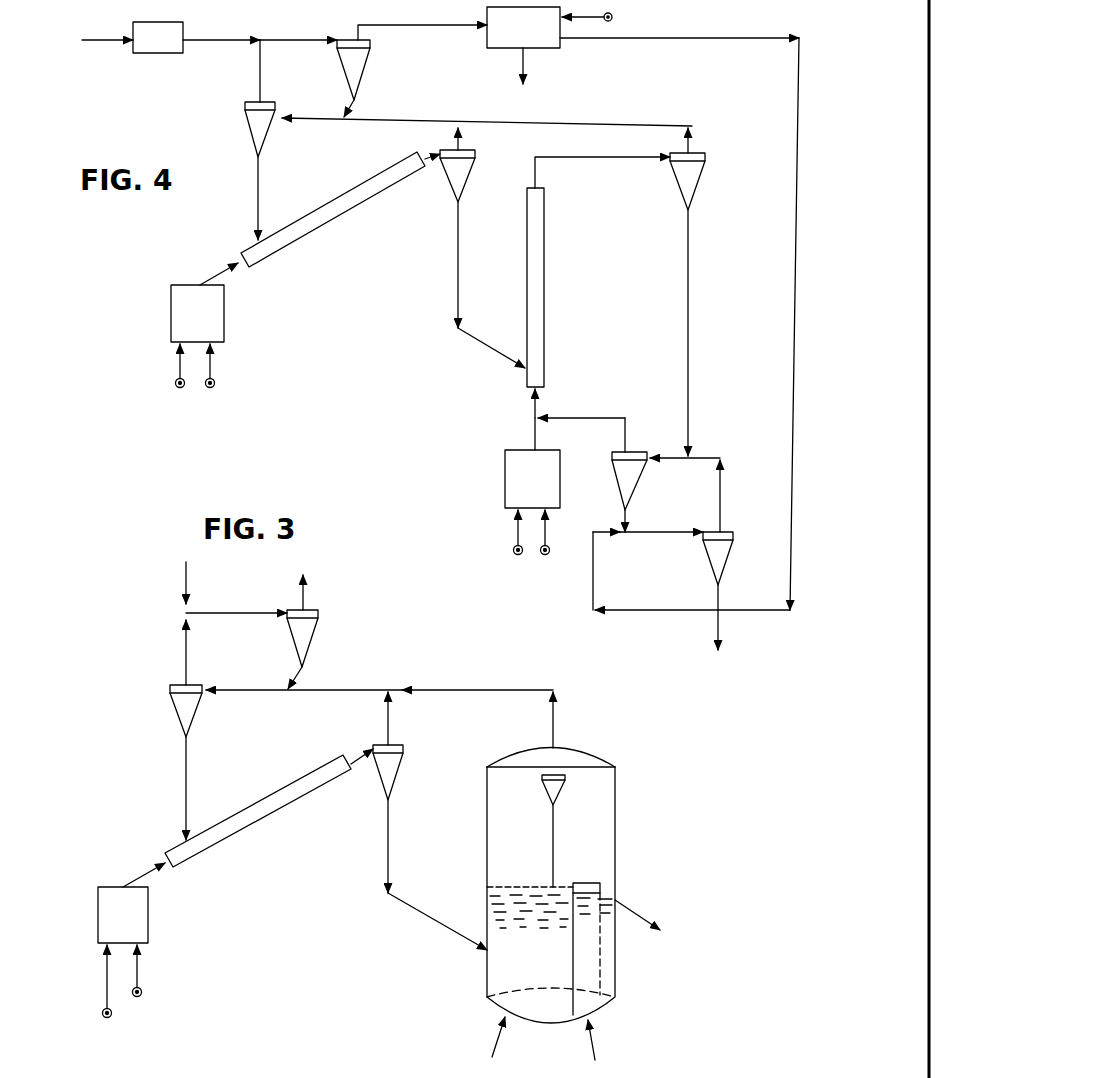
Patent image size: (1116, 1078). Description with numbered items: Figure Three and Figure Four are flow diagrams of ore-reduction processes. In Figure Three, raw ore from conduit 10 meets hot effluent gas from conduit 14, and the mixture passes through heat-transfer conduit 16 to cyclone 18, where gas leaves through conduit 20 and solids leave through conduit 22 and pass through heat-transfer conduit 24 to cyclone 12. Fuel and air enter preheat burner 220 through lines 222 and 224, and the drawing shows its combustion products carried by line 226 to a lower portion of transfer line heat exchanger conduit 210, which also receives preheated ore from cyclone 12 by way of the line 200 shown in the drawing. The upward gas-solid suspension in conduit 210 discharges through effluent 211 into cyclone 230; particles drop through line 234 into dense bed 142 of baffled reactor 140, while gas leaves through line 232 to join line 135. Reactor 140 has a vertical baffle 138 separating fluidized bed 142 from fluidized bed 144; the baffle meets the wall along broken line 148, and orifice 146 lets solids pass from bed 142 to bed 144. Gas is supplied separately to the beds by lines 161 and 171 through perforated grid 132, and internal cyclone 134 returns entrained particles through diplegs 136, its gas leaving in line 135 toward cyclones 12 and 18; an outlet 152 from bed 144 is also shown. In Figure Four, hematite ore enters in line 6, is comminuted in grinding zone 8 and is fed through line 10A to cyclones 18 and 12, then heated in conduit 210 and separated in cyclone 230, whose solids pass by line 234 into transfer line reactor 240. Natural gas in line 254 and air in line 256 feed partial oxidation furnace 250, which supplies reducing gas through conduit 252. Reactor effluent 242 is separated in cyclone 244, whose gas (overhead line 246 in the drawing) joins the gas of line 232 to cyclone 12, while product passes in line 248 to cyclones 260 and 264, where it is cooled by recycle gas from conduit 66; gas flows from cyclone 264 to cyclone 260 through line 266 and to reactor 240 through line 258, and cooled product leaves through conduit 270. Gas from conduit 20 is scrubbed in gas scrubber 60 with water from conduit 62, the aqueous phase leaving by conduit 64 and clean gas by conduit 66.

In FIG. 4, the ore feed line 6 is at (100, 34).
In FIG. 4, the grinding zone 8 is at (163, 22).
In FIG. 4, the feed line 10A is at (215, 39).
In FIG. 3, the feed solids conduit 10 is at (184, 580).
In FIG. 4, the cyclone 12 is at (246, 125).
In FIG. 3, the cyclone 12 is at (170, 708).
In FIG. 4, the hot effluent gas conduit 14 is at (257, 73).
In FIG. 3, the hot effluent gas conduit 14 is at (182, 654).
In FIG. 4, the heat-transfer conduit 16 is at (301, 40).
In FIG. 3, the heat-transfer conduit 16 is at (240, 613).
In FIG. 4, the cyclone 18 is at (371, 62).
In FIG. 3, the cyclone 18 is at (320, 640).
In FIG. 4, the gas withdrawal conduit 20 is at (404, 25).
In FIG. 3, the gas withdrawal conduit 20 is at (308, 600).
In FIG. 4, the solids withdrawal conduit 22 is at (358, 108).
In FIG. 3, the solids withdrawal conduit 22 is at (302, 678).
In FIG. 4, the heat-transfer conduit 24 is at (308, 118).
In FIG. 3, the heat-transfer conduit 24 is at (242, 692).
In FIG. 4, the gas scrubber 60 is at (552, 51).
In FIG. 4, the cooling water conduit 62 is at (605, 23).
In FIG. 4, the aqueous phase conduit 64 is at (520, 63).
In FIG. 4, the scrubbed gas conduit 66 is at (764, 38).
In FIG. 4, the solids line from cyclone 12 200 is at (256, 189).
In FIG. 3, the solids line from cyclone 12 200 is at (182, 777).
In FIG. 4, the transfer line heat exchanger conduit 210 is at (322, 222).
In FIG. 3, the transfer line heat exchanger conduit 210 is at (272, 810).
In FIG. 4, the heat exchanger effluent 211 is at (426, 157).
In FIG. 3, the heat exchanger effluent 211 is at (350, 756).
In FIG. 4, the preheat burner 220 is at (171, 307).
In FIG. 3, the preheat burner 220 is at (100, 912).
In FIG. 4, the fuel line 222 is at (177, 368).
In FIG. 3, the fuel line 222 is at (104, 972).
In FIG. 4, the air line 224 is at (213, 364).
In FIG. 3, the air line 224 is at (139, 964).
In FIG. 4, the hot gas line to kiln 226 is at (214, 269).
In FIG. 3, the hot gas line to kiln 226 is at (130, 872).
In FIG. 4, the cyclone 230 is at (470, 174).
In FIG. 3, the cyclone 230 is at (403, 754).
In FIG. 4, the combustion products line 232 is at (463, 143).
In FIG. 3, the combustion products line 232 is at (390, 726).
In FIG. 4, the particle withdrawal line 234 is at (454, 272).
In FIG. 3, the particle withdrawal line 234 is at (386, 857).
In FIG. 4, the transfer line reactor 240 is at (544, 271).
In FIG. 4, the reactor effluent line 242 is at (596, 157).
In FIG. 4, the cyclone 244 is at (703, 174).
In FIG. 4, the overhead line from cyclone 244 246 is at (698, 144).
In FIG. 4, the product line 248 is at (690, 291).
In FIG. 4, the partial oxidation furnace 250 is at (504, 477).
In FIG. 4, the reducing gas conduit 252 is at (530, 433).
In FIG. 4, the natural gas line 254 is at (515, 528).
In FIG. 4, the air line 256 is at (548, 529).
In FIG. 4, the recycle gas line 258 is at (594, 417).
In FIG. 4, the cyclone 260 is at (633, 482).
In FIG. 4, the cyclone 264 is at (726, 556).
In FIG. 4, the gas transfer line 266 is at (720, 500).
In FIG. 4, the product outlet conduit 270 is at (722, 630).
In FIG. 3, the perforated grid 132 is at (510, 986).
In FIG. 3, the internal cyclone 134 is at (556, 794).
In FIG. 3, the gas outlet line 135 is at (528, 696).
In FIG. 3, the diplegs 136 is at (556, 823).
In FIG. 3, the vertical baffle 138 is at (565, 884).
In FIG. 3, the baffled reactor 140 is at (616, 806).
In FIG. 3, the fluidized bed of solids 142 is at (518, 886).
In FIG. 3, the fluidized bed of solids 144 is at (609, 942).
In FIG. 3, the orifice 146 is at (566, 962).
In FIG. 3, the broken line 148 is at (606, 884).
In FIG. 3, the overflow outlet 152 is at (638, 906).
In FIG. 3, the gas supply line 161 is at (496, 1038).
In FIG. 3, the gas supply line 171 is at (592, 1042).